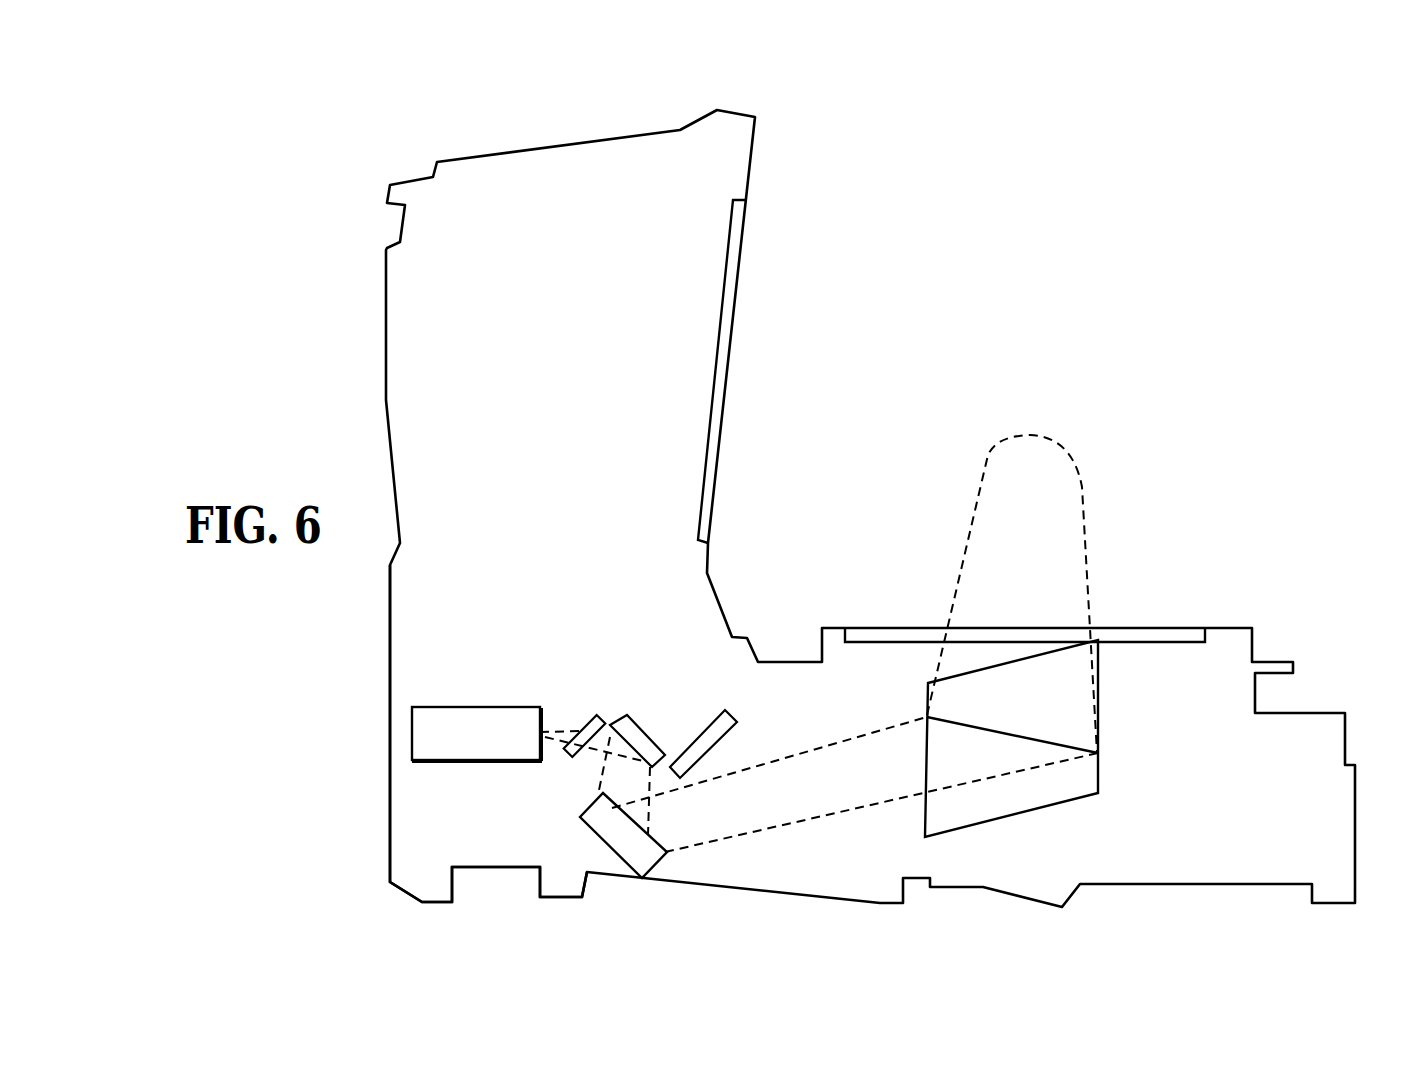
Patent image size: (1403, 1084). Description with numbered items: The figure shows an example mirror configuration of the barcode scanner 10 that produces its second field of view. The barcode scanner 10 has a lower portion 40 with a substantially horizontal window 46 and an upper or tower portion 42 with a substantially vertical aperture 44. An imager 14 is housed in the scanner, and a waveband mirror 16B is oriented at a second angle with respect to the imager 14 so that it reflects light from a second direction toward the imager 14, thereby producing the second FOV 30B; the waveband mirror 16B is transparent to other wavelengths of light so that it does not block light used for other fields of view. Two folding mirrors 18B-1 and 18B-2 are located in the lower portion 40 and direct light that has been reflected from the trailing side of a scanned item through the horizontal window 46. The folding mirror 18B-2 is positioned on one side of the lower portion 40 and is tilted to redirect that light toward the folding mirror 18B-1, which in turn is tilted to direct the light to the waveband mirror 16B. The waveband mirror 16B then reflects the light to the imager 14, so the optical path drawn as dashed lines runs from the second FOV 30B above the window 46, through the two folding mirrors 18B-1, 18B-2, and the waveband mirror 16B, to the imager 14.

The barcode scanner 10 is at (1197, 123).
The upper portion 42 is at (385, 318).
The vertical aperture 44 is at (743, 245).
The horizontal window 46 is at (1172, 628).
The lower portion 40 is at (388, 752).
The imager 14 is at (475, 760).
The waveband mirror 16B is at (647, 735).
The folding mirror 18B-1 is at (600, 840).
The folding mirror 18B-2 is at (1053, 805).
The second field of view 30B is at (1080, 473).